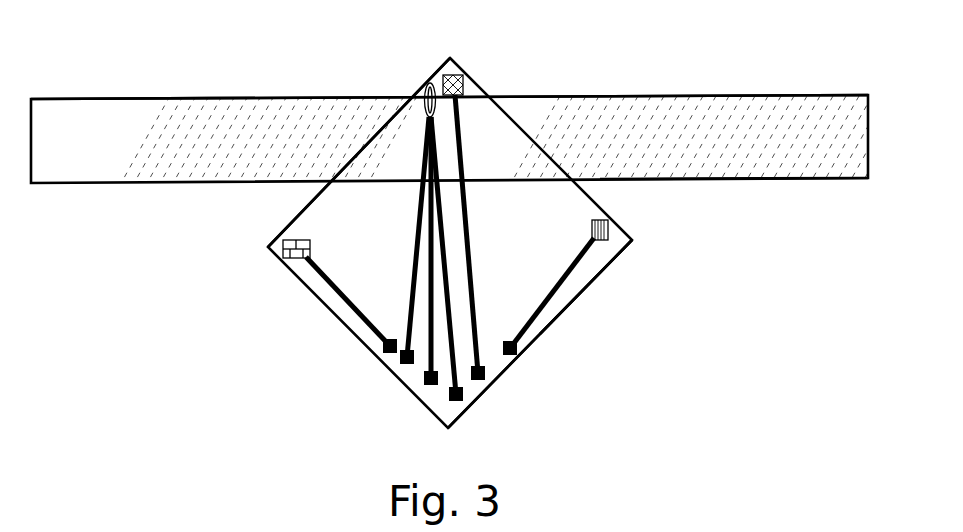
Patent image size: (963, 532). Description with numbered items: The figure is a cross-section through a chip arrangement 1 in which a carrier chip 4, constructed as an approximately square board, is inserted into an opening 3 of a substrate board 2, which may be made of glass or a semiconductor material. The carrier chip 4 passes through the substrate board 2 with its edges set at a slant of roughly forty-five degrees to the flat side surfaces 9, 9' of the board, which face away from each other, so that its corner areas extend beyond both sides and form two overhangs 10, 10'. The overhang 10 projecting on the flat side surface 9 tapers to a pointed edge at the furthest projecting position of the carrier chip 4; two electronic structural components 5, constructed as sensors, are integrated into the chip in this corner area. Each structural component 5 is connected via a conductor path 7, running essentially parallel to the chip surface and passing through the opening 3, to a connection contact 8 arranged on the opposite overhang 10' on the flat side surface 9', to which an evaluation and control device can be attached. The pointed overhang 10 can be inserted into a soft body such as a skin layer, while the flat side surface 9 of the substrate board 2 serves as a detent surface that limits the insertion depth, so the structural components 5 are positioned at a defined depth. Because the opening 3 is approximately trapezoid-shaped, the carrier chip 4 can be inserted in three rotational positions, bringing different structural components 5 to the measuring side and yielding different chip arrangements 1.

The chip arrangement 1 is at (175, 367).
The substrate board 2 is at (141, 160).
The opening 3 is at (358, 188).
The carrier chip 4 is at (588, 277).
The electronic structural components 5 is at (447, 78).
The conductor paths 7 is at (432, 277).
The connection contacts 8 is at (388, 349).
The flat side surface 9 is at (449, 49).
The flat side surface 9' is at (734, 236).
The overhang 10 is at (450, 214).
The overhang 10' is at (597, 334).